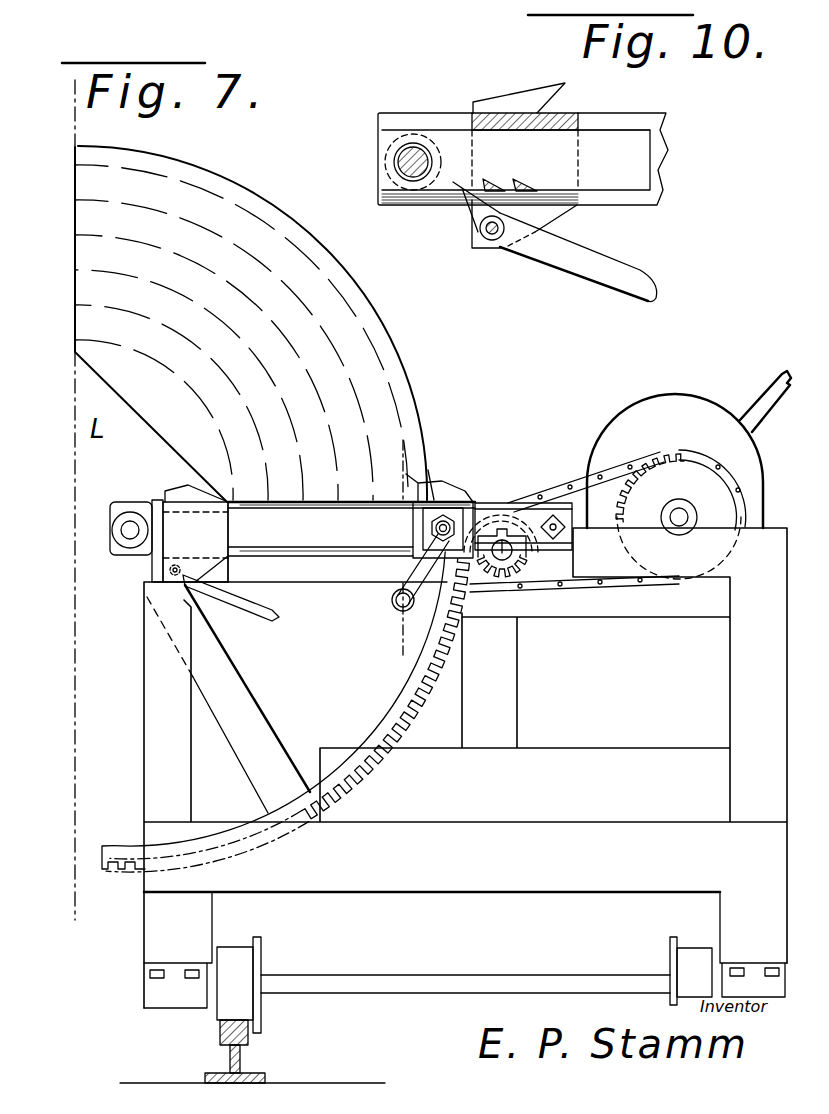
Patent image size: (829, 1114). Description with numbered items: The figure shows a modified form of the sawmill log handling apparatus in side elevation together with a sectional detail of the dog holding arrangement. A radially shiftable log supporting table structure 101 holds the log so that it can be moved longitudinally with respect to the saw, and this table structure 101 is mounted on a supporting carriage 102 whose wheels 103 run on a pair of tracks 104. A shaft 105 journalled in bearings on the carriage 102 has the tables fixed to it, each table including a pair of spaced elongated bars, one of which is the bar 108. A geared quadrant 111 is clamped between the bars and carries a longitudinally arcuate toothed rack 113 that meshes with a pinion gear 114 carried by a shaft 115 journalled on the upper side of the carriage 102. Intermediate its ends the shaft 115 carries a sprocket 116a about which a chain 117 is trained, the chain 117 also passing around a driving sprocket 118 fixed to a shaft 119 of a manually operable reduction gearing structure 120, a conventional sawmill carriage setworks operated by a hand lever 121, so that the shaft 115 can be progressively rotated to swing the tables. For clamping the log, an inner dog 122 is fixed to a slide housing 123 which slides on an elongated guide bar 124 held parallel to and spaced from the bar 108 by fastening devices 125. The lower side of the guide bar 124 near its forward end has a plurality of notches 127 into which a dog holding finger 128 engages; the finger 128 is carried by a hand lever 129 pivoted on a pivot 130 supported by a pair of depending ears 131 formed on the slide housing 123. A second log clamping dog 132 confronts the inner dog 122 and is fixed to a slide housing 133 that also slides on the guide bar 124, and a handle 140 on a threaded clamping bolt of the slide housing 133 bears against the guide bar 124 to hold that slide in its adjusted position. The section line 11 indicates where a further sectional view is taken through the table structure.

In FIG. 7, the log supporting table structure 101 is at (253, 502).
In FIG. 7, the supporting carriage 102 is at (508, 726).
In FIG. 7, the wheels 103 is at (262, 958).
In FIG. 7, the tracks 104 is at (252, 1040).
In FIG. 7, the shaft 105 is at (125, 530).
In FIG. 10, the shaft 105 is at (405, 164).
In FIG. 10, the elongated bar 108 is at (658, 208).
In FIG. 7, the section line 11 is at (440, 440).
In FIG. 7, the geared quadrant 111 is at (252, 690).
In FIG. 7, the arcuate toothed rack 113 is at (408, 693).
In FIG. 7, the pinion gear 114 is at (527, 568).
In FIG. 7, the shaft 115 is at (502, 563).
In FIG. 7, the sprocket 116a is at (535, 590).
In FIG. 7, the chain 117 is at (576, 470).
In FIG. 7, the driving sprocket 118 is at (662, 477).
In FIG. 7, the shaft 119 is at (679, 520).
In FIG. 7, the reduction gearing structure 120 is at (688, 400).
In FIG. 7, the hand lever 121 is at (771, 386).
In FIG. 7, the inner dog 122 is at (185, 492).
In FIG. 10, the inner dog 122 is at (502, 98).
In FIG. 7, the slide housing 123 is at (262, 525).
In FIG. 10, the slide housing 123 is at (570, 118).
In FIG. 7, the guide bar 124 is at (333, 540).
In FIG. 10, the guide bar 124 is at (632, 140).
In FIG. 7, the fastening devices 125 is at (556, 518).
In FIG. 10, the notches 127 is at (492, 184).
In FIG. 10, the dog holding finger 128 is at (472, 212).
In FIG. 7, the hand lever 129 is at (266, 610).
In FIG. 10, the hand lever 129 is at (560, 260).
In FIG. 10, the pivot 130 is at (490, 238).
In FIG. 10, the depending ears 131 is at (573, 210).
In FIG. 7, the second log clamping dog 132 is at (447, 492).
In FIG. 7, the slide housing 133 is at (492, 506).
In FIG. 7, the handle 140 is at (405, 600).